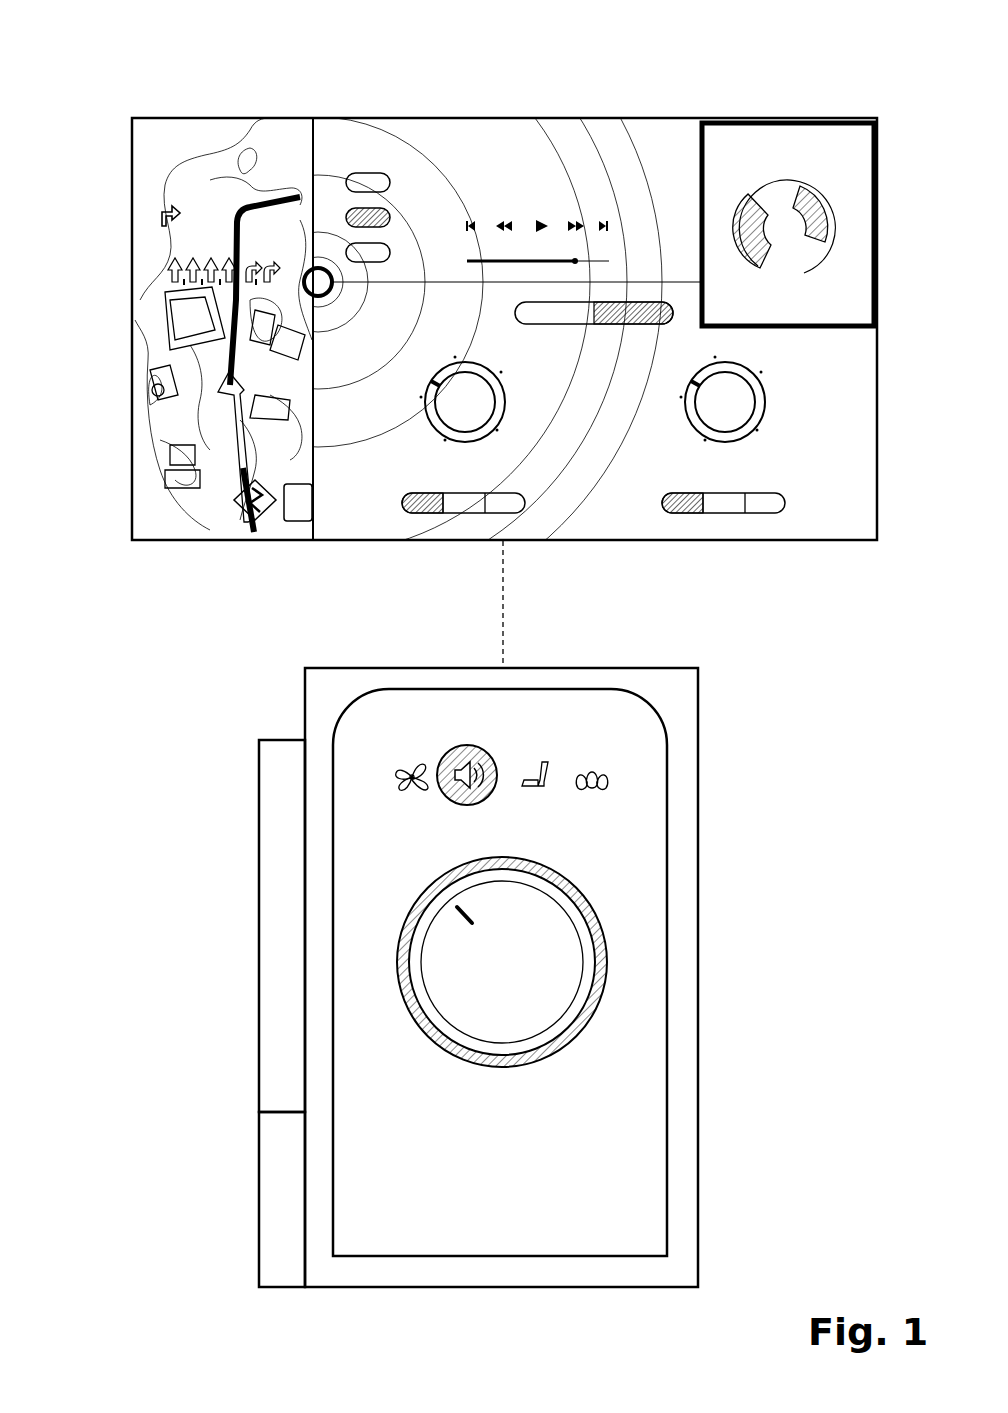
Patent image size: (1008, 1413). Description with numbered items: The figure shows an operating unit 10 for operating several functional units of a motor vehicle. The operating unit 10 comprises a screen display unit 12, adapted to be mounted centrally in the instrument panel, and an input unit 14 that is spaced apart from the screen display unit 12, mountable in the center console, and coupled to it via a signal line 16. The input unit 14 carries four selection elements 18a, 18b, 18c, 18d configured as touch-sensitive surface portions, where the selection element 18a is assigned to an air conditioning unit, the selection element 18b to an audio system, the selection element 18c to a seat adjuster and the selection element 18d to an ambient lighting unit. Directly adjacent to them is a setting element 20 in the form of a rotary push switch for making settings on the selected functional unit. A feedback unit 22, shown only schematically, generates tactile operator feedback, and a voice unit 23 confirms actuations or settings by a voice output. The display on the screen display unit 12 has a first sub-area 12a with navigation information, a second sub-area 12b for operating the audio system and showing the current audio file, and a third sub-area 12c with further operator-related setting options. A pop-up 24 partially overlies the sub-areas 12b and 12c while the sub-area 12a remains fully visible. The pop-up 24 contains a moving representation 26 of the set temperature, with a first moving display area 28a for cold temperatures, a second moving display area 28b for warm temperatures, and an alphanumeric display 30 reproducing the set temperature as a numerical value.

The operating unit 10 is at (764, 92).
The screen display unit 12 is at (178, 113).
The first sub-area 12a is at (155, 250).
The second sub-area 12b is at (540, 165).
The third sub-area 12c is at (820, 407).
The input unit 14 is at (715, 722).
The signal line 16 is at (503, 562).
The selection element 18a is at (410, 740).
The selection element 18b is at (467, 738).
The selection element 18c is at (538, 752).
The selection element 18d is at (598, 752).
The setting element 20 is at (557, 977).
The feedback unit 22 is at (278, 910).
The voice unit 23 is at (278, 1197).
The pop-up 24 is at (882, 185).
The moving representation 26 is at (850, 228).
The first moving display area 28a is at (742, 200).
The second moving display area 28b is at (820, 197).
The alphanumeric display 30 is at (786, 195).